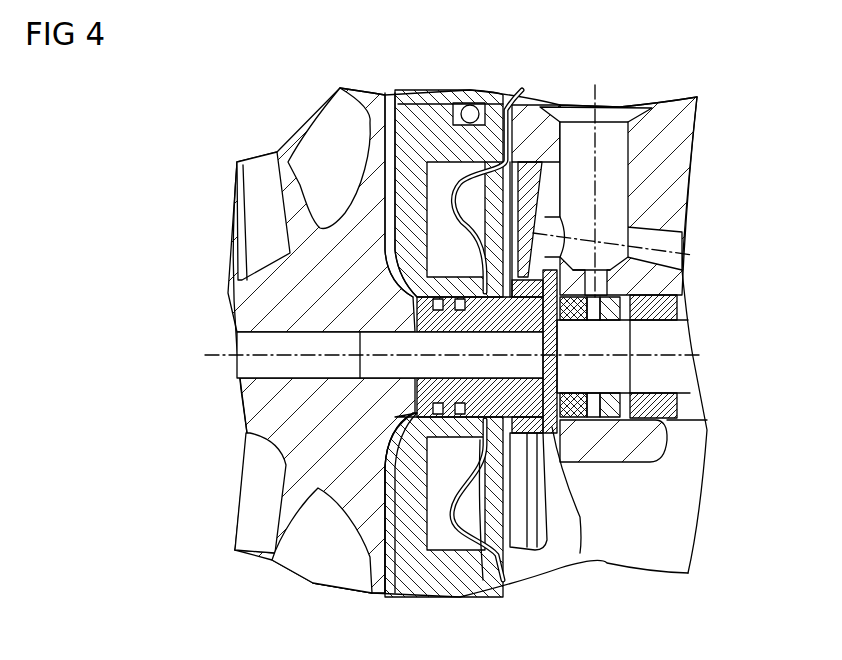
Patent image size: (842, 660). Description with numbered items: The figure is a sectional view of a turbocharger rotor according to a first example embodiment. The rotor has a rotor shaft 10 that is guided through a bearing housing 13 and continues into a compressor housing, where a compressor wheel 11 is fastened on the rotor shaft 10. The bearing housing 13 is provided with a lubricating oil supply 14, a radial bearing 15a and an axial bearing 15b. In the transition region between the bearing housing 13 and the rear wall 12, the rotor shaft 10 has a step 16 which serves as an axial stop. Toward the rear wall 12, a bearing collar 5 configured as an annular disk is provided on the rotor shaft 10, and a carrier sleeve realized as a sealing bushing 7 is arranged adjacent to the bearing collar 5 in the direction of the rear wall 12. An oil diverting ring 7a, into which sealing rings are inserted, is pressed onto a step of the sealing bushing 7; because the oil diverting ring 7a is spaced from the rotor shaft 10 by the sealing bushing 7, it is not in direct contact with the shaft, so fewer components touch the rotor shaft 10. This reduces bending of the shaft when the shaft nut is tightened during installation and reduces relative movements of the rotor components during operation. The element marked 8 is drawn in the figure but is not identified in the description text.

The bearing collar 5 is at (580, 553).
The sealing bushing 7 is at (447, 388).
The oil diverting ring 7a is at (478, 540).
The sealing plate 8 is at (542, 553).
The rotor shaft 10 is at (280, 370).
The compressor wheel 11 is at (295, 417).
The rear wall 12 is at (410, 113).
The bearing housing 13 is at (663, 143).
The lubricating oil supply 14 is at (612, 140).
The radial bearing 15a is at (673, 310).
The axial bearing 15b is at (513, 105).
The step 16 is at (563, 372).